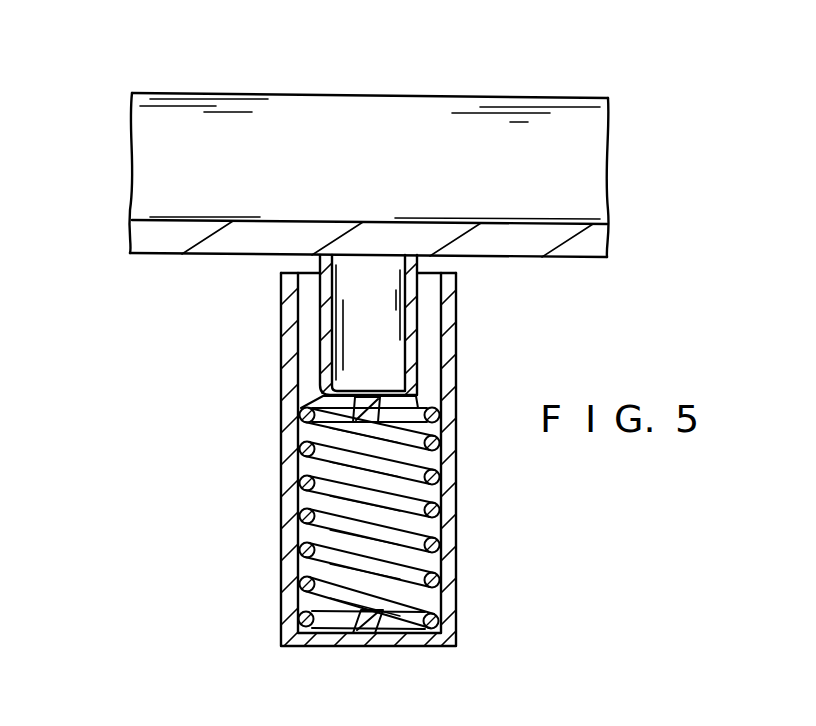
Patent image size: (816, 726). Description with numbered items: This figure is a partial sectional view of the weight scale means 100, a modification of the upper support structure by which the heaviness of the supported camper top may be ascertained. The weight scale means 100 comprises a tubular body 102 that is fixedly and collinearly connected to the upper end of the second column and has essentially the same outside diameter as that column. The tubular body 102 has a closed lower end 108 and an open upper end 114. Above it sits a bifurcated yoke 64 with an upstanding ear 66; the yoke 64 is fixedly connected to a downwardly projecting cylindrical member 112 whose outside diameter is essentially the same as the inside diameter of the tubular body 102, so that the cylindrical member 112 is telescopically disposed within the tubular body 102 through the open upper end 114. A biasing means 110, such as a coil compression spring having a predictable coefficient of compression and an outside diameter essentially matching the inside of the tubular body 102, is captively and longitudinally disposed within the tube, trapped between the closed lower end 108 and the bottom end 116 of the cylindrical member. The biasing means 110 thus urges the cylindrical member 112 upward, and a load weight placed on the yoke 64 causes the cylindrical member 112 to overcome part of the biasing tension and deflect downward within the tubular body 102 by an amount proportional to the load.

The upstanding ear 66 is at (285, 115).
The bifurcated yoke 64 is at (178, 246).
The weight scale means 100 is at (250, 505).
The tubular body 102 is at (281, 583).
The closed lower end 108 is at (330, 647).
The biasing means 110 is at (415, 530).
The cylindrical member 112 is at (410, 347).
The open upper end 114 is at (318, 270).
The bottom end of the cylindrical member 116 is at (317, 402).